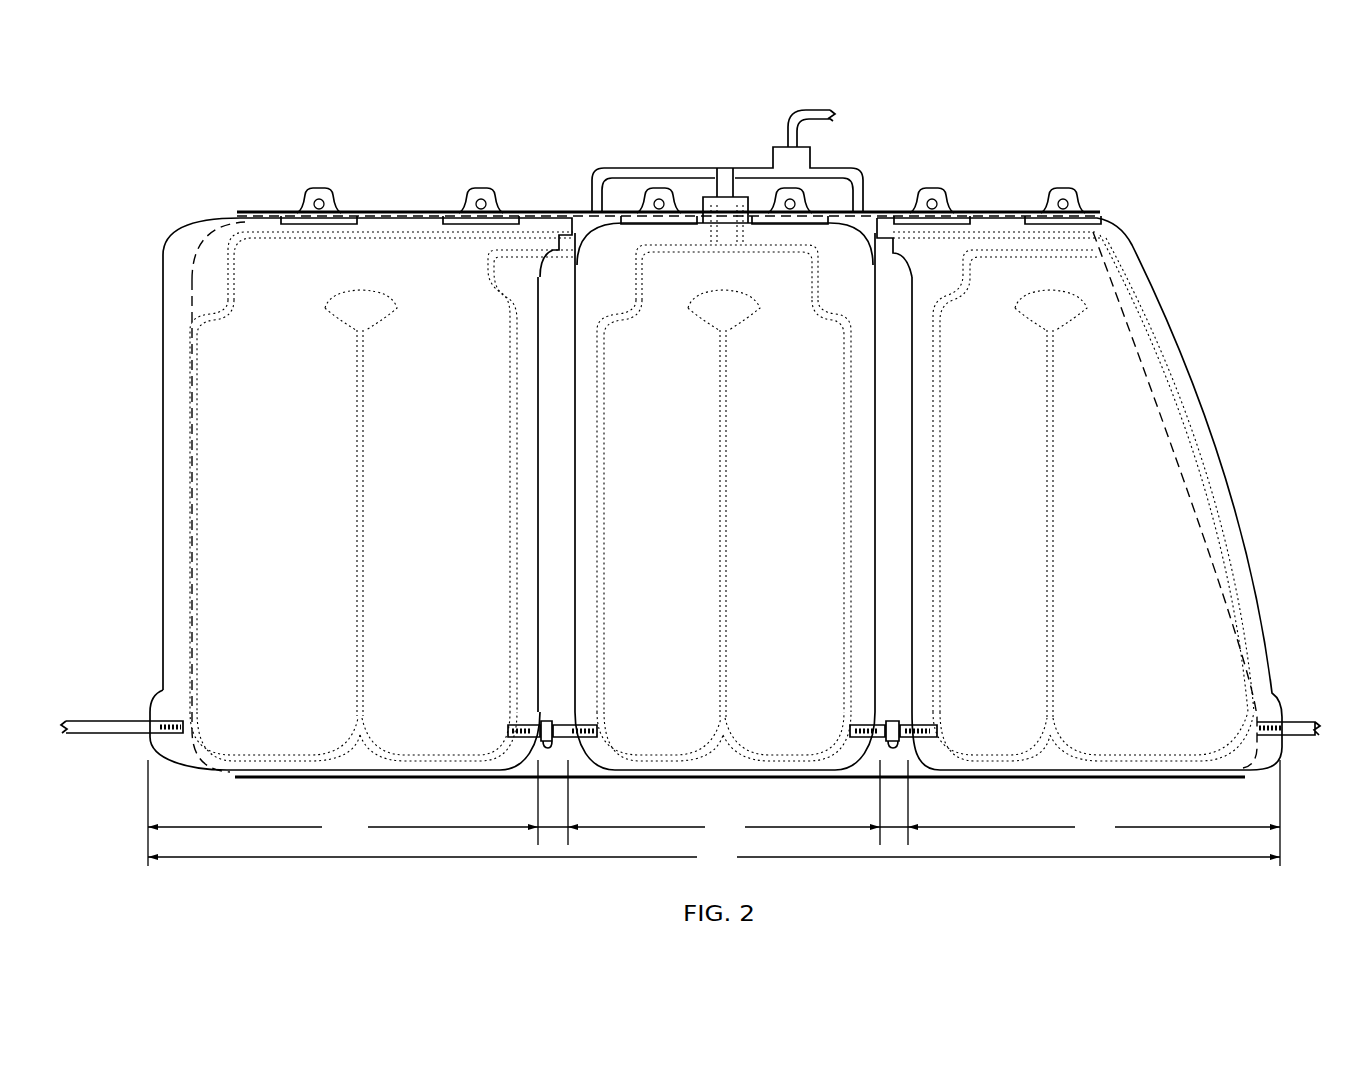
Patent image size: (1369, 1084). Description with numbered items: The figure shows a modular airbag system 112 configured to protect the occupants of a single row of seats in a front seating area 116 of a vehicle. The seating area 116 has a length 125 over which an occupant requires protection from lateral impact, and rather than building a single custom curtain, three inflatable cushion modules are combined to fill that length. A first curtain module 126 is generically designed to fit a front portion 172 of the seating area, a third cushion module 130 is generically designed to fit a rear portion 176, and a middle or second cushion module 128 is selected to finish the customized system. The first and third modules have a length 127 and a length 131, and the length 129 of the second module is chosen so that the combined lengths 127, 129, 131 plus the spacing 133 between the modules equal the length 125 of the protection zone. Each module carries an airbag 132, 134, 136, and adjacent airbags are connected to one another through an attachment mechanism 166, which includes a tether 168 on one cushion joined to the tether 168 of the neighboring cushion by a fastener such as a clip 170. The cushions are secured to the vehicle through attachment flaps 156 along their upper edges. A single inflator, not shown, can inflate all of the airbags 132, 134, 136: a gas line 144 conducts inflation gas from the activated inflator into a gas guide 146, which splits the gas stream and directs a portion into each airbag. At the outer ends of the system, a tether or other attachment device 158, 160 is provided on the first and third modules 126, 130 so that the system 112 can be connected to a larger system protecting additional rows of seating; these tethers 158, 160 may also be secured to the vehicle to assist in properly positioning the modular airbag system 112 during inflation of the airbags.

The modular airbag system 112 is at (1178, 206).
The front seating area 116 is at (938, 165).
The length of the seating area 125 is at (714, 858).
The first curtain module 126 is at (1002, 257).
The length of the first cushion module 127 is at (1094, 813).
The second cushion module 128 is at (730, 270).
The length of the second cushion module 129 is at (724, 802).
The third cushion module 130 is at (388, 265).
The length of the third cushion module 131 is at (343, 813).
The airbag 132 is at (1012, 514).
The spacing 133 is at (552, 822).
The airbag 134 is at (800, 514).
The airbag 136 is at (441, 514).
The gas line 144 is at (790, 115).
The gas guide 146 is at (865, 178).
The attachment flap 156 is at (318, 190).
The tether 158 is at (1300, 720).
The tether 160 is at (118, 720).
The attachment mechanism 166 is at (561, 700).
The tether 168 is at (520, 725).
The clip 170 is at (546, 722).
The front portion 172 is at (1243, 426).
The rear portion 176 is at (128, 394).